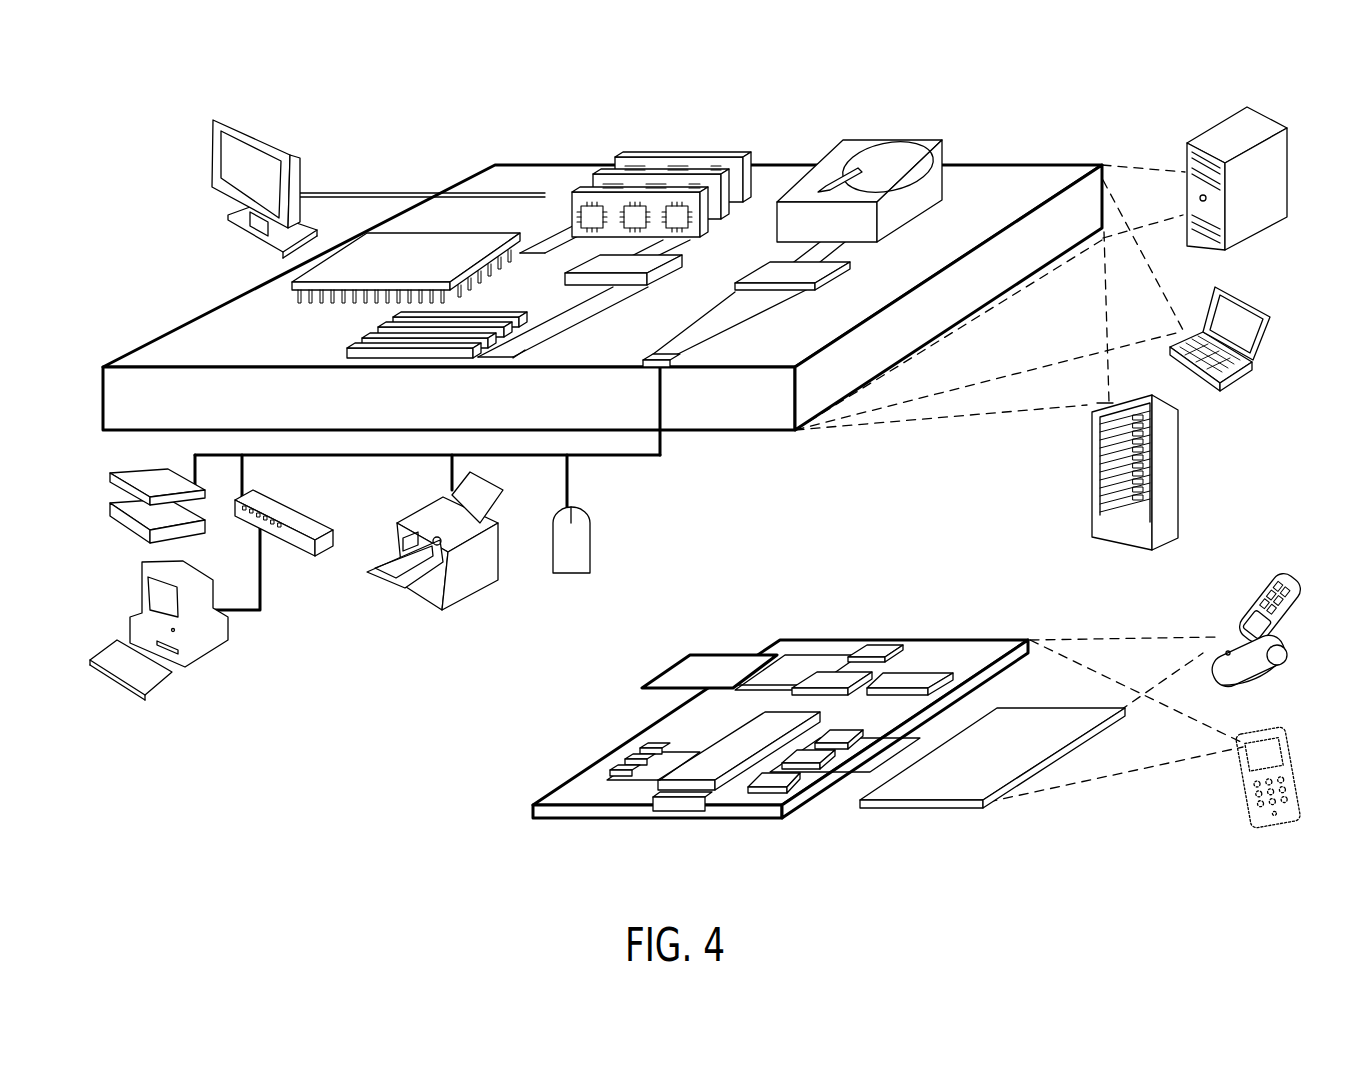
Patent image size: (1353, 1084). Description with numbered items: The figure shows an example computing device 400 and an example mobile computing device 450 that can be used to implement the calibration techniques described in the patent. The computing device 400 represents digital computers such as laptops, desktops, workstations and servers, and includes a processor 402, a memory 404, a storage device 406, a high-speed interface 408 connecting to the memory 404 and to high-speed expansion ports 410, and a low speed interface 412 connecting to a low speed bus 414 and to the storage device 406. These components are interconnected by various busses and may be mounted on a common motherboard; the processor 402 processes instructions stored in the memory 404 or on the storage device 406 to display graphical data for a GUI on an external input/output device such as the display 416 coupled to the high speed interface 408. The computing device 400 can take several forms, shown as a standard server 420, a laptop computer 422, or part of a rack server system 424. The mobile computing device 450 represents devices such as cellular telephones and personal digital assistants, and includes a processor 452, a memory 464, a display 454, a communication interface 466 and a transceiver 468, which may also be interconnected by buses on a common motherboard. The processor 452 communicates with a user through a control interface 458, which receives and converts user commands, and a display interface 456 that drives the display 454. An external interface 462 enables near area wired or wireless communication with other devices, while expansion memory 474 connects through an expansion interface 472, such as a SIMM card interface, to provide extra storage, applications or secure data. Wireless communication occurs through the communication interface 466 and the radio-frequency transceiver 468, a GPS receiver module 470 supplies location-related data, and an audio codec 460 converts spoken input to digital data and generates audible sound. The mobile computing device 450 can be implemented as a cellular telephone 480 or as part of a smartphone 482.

The computing device 400 is at (402, 82).
The processor 402 is at (292, 284).
The memory 404 is at (640, 157).
The storage device 406 is at (863, 142).
The high-speed interface 408 is at (597, 268).
The high-speed expansion ports 410 is at (373, 338).
The low speed interface 412 is at (793, 272).
The low speed bus 414 is at (661, 368).
The display 416 is at (213, 120).
The standard server 420 is at (1187, 148).
The laptop computer 422 is at (1215, 292).
The rack server system 424 is at (1092, 497).
The mobile computing device 450 is at (756, 609).
The processor 452 is at (717, 790).
The display 454 is at (988, 805).
The display interface 456 is at (788, 792).
The control interface 458 is at (840, 773).
The audio codec 460 is at (842, 748).
The external interface 462 is at (678, 803).
The memory 464 is at (628, 765).
The communication interface 466 is at (830, 680).
The transceiver 468 is at (912, 680).
The GPS receiver module 470 is at (876, 648).
The expansion interface 472 is at (752, 657).
The expansion memory 474 is at (680, 657).
The cellular telephone 480 is at (1272, 590).
The smartphone 482 is at (1262, 727).